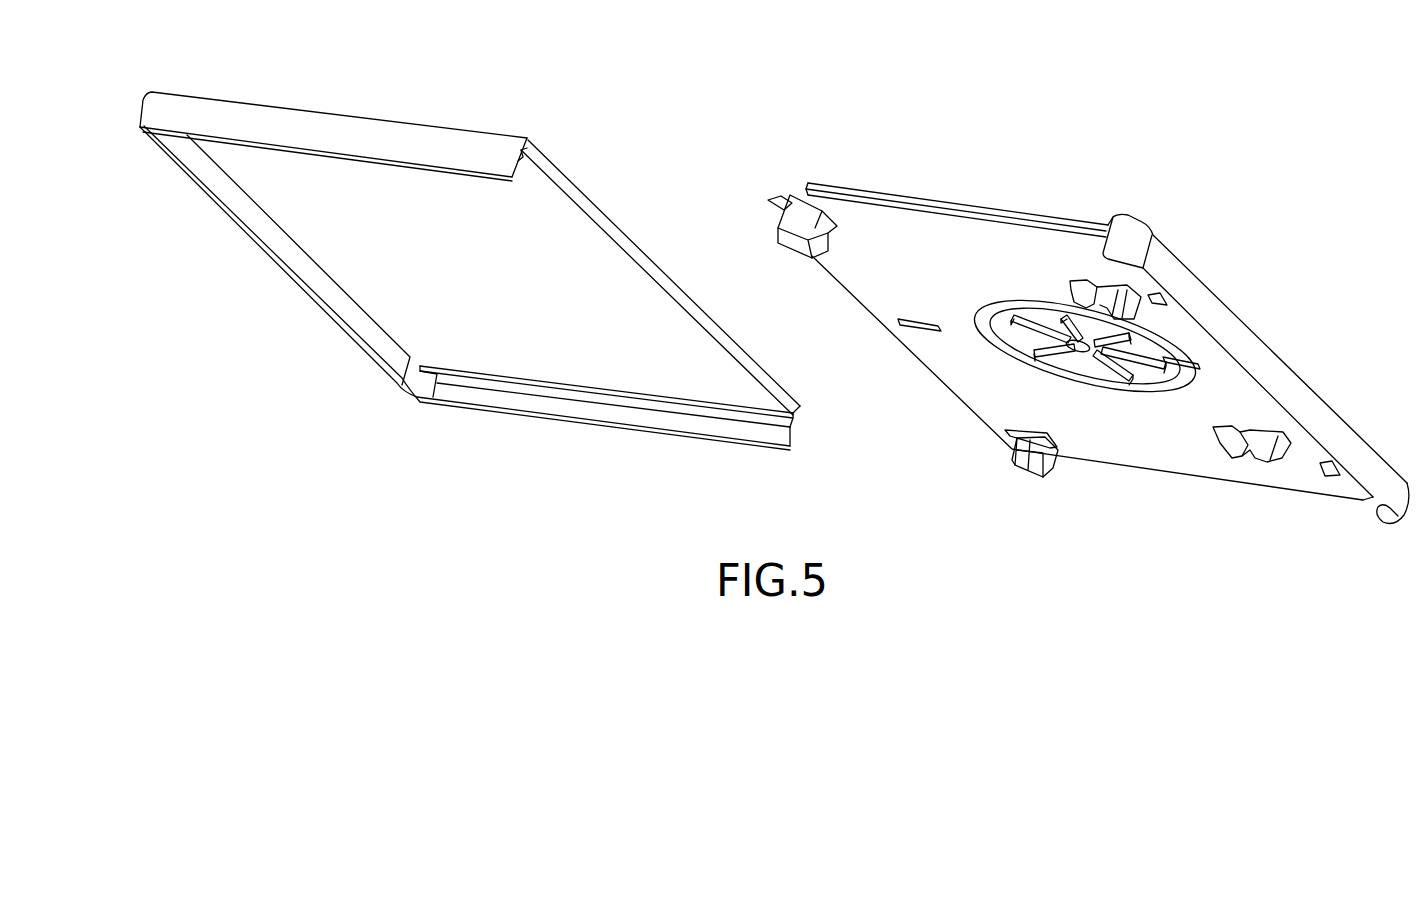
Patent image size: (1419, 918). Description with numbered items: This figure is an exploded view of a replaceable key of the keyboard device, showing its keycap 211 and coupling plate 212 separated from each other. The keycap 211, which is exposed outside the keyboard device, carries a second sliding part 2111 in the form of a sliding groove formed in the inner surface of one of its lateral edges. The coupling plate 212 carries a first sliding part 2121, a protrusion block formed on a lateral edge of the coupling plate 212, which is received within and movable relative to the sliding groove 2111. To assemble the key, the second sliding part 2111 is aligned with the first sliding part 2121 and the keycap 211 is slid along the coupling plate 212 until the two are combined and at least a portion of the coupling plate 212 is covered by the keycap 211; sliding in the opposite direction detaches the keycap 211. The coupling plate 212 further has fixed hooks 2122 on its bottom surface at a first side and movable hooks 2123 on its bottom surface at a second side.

The keycap 211 is at (393, 88).
The second sliding part 2111 is at (533, 150).
The coupling plate 212 is at (1240, 290).
The first sliding part 2121 is at (960, 207).
The fixed hooks 2122 is at (1080, 285).
The movable hooks 2123 is at (790, 226).